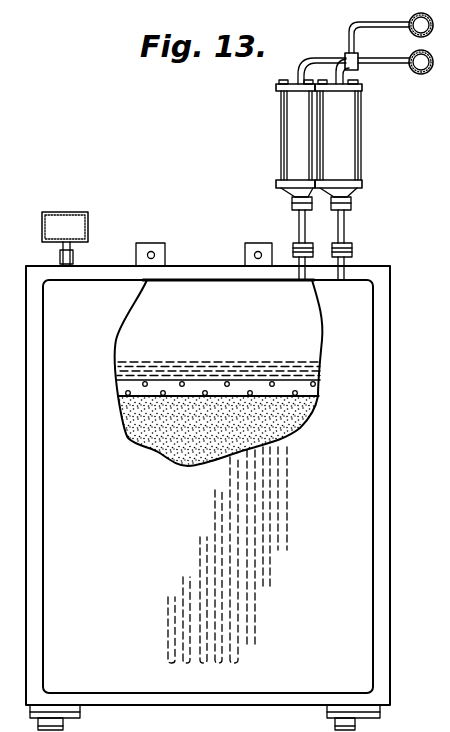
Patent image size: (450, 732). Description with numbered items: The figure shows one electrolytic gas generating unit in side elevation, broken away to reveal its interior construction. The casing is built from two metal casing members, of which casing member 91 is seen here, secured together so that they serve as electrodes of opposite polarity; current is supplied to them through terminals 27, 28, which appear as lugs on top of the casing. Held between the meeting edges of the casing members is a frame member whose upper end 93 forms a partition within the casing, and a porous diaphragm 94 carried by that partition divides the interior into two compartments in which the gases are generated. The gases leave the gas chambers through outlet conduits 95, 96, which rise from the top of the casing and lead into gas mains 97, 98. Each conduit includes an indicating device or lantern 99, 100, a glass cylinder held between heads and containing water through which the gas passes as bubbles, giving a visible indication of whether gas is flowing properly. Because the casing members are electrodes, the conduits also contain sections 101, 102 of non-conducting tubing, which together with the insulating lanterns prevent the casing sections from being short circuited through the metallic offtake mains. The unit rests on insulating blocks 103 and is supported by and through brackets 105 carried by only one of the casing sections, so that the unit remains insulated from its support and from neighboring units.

The terminal 27 is at (255, 245).
The terminal 28 is at (148, 243).
The casing member 91 is at (58, 444).
The upper end of frame member 93 is at (292, 328).
The porous diaphragm 94 is at (183, 423).
The outlet conduit 95 is at (374, 58).
The outlet conduit 96 is at (365, 22).
The gas main 97 is at (422, 74).
The gas main 98 is at (412, 18).
The indicating device 99 is at (300, 146).
The indicating device 100 is at (340, 153).
The section of non-conducting tubing 101 is at (303, 68).
The section of non-conducting tubing 102 is at (358, 66).
The insulating block 103 is at (356, 725).
The bracket 105 is at (381, 710).